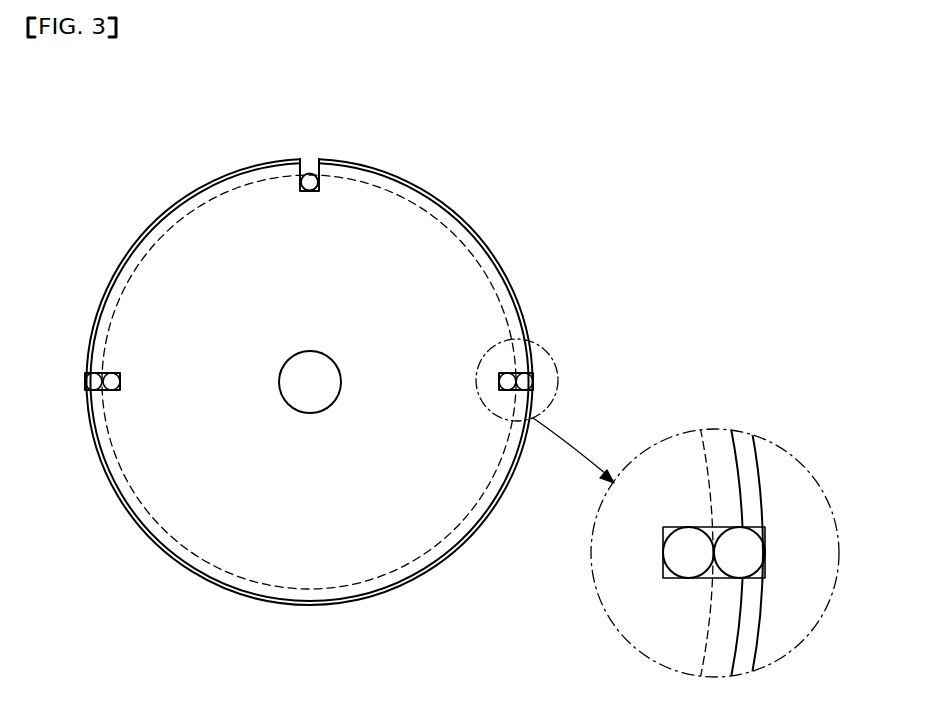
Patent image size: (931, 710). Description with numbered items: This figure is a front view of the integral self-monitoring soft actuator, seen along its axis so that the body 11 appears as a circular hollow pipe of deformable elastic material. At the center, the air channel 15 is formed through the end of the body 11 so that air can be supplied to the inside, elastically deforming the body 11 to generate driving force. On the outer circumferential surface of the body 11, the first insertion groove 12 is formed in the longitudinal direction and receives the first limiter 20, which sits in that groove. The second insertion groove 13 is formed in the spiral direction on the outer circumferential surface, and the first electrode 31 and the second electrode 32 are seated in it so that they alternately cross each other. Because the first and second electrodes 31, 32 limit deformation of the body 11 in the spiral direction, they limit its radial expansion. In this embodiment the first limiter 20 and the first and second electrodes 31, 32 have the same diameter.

The body 11 is at (415, 186).
The first insertion groove 12 is at (310, 178).
The second insertion groove 13 is at (90, 377).
The air channel 15 is at (312, 384).
The first limiter 20 is at (306, 180).
The first electrode 31 is at (84, 412).
The second electrode 32 is at (107, 380).